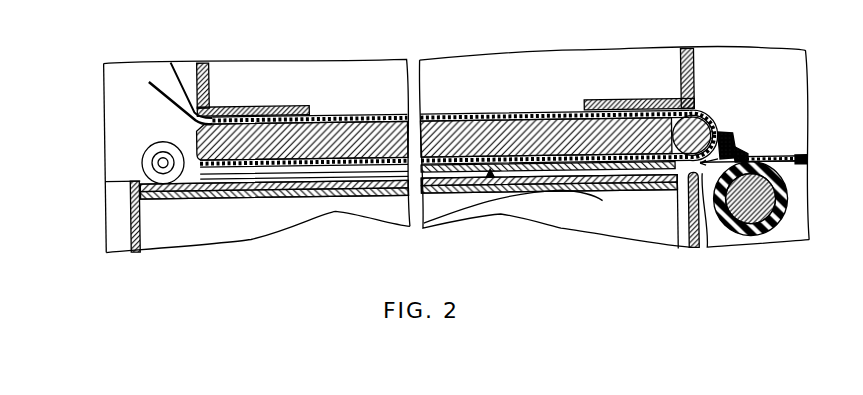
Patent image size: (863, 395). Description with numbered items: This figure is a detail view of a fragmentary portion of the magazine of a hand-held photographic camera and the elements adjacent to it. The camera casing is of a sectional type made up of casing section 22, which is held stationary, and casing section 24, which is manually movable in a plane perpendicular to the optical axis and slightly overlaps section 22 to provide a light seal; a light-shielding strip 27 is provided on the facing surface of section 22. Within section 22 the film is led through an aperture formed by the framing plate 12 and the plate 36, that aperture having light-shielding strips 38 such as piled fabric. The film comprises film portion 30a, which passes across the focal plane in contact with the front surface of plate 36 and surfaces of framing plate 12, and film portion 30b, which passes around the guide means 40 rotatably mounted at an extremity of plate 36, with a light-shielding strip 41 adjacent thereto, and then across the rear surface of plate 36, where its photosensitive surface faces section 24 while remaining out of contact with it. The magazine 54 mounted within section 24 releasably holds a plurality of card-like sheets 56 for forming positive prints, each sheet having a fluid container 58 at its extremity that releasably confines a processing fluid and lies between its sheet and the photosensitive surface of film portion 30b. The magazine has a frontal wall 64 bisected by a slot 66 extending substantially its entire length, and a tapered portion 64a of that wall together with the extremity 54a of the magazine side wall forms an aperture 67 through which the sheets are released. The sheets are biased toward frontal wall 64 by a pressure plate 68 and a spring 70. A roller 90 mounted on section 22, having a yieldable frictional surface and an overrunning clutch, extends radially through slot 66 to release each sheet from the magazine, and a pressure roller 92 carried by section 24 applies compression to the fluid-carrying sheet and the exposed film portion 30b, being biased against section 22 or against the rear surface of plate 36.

The framing plate 12 is at (267, 103).
The casing section 22 is at (765, 55).
The casing section 24 is at (803, 205).
The light-shielding strip 27 is at (800, 163).
The film portion 30a is at (485, 114).
The film portion 30b is at (338, 165).
The plate 36 is at (358, 132).
The light-shielding strips 38 is at (239, 103).
The guide means 40 is at (705, 123).
The light-shielding strip 41 is at (733, 138).
The magazine 54 is at (129, 213).
The extremity of magazine side wall 54a is at (695, 253).
The sheets 56 is at (190, 186).
The fluid container 58 is at (678, 247).
The frontal wall 64 is at (489, 223).
The tapered portion 64a is at (647, 155).
The slot 66 is at (255, 177).
The aperture 67 is at (740, 156).
The pressure plate 68 is at (618, 193).
The spring 70 is at (492, 178).
The roller 90 is at (148, 145).
The pressure roller 92 is at (775, 227).